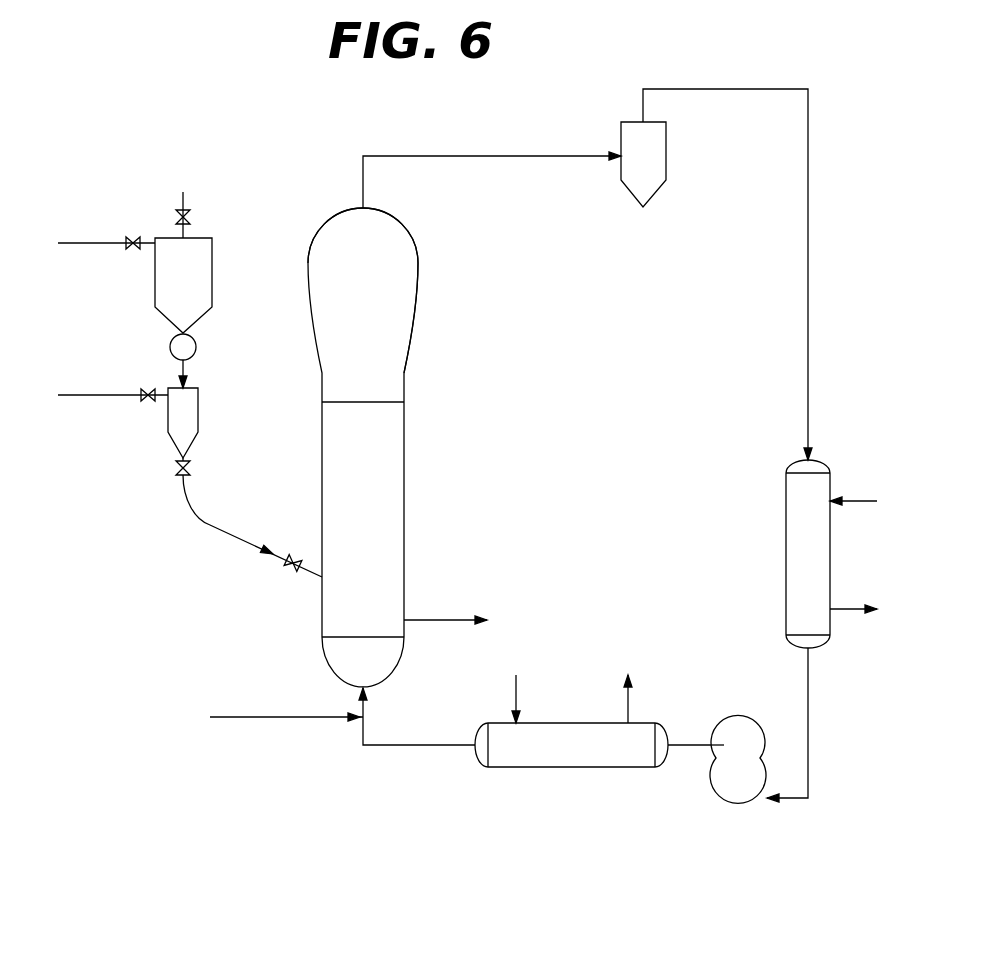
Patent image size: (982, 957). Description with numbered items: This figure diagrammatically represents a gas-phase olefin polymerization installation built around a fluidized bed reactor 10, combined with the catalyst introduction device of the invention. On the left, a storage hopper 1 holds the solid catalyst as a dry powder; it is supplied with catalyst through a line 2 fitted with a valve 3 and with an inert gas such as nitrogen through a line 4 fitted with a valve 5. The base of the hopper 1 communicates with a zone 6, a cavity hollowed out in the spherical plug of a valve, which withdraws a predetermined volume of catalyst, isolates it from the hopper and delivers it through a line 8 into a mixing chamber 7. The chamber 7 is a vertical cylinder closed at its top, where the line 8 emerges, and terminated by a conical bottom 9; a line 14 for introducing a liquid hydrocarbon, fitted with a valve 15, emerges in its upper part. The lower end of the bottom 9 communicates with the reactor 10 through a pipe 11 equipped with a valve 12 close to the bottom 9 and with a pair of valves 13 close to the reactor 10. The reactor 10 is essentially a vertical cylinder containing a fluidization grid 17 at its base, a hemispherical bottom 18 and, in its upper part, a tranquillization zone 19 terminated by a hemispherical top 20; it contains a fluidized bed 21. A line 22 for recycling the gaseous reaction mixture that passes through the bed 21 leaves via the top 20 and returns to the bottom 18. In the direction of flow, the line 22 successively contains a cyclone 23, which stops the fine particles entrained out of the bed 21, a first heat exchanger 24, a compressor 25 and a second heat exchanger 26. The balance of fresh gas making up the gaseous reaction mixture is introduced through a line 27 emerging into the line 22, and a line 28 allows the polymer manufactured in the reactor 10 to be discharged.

The storage hopper 1 is at (212, 277).
The line 2 is at (183, 193).
The valve 3 is at (190, 217).
The line 4 is at (72, 247).
The valve 5 is at (133, 250).
The zone 6 is at (196, 347).
The mixing chamber 7 is at (198, 413).
The line 8 is at (180, 370).
The conical bottom 9 is at (186, 452).
The fluidized bed reactor 10 is at (404, 450).
The pipe 11 is at (210, 528).
The valve 12 is at (178, 470).
The pair of valves 13 is at (290, 570).
The line 14 is at (82, 395).
The valve 15 is at (150, 400).
The fluidization grid 17 is at (330, 637).
The hemispherical bottom 18 is at (390, 683).
The tranquillization zone 19 is at (412, 310).
The hemispherical top 20 is at (410, 222).
The fluidized bed 21 is at (390, 525).
The line 22 is at (510, 156).
The cyclone 23 is at (650, 180).
The first heat exchanger 24 is at (800, 545).
The compressor 25 is at (738, 800).
The second heat exchanger 26 is at (570, 758).
The line 27 is at (262, 722).
The line 28 is at (452, 618).